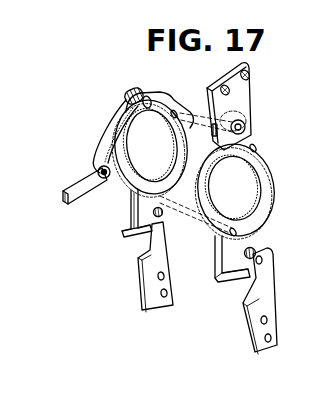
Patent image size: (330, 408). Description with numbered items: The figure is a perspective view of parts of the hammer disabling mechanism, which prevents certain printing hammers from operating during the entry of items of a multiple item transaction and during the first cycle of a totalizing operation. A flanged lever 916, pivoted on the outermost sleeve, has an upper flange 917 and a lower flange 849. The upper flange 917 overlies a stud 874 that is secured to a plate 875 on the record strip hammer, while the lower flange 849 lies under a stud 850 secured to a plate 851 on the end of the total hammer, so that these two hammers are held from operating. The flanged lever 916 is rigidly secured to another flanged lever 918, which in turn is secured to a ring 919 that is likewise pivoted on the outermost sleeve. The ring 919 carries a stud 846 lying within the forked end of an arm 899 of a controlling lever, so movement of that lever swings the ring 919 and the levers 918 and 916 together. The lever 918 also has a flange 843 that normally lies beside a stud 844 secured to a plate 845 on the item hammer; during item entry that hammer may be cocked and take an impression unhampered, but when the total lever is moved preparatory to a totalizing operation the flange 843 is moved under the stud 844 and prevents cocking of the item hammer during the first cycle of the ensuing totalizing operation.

The ring 919 is at (126, 96).
The flanged lever 918 is at (166, 108).
The plate 875 is at (247, 88).
The upper flange 917 is at (240, 110).
The stud 874 is at (245, 127).
The stud 846 is at (105, 180).
The arm 899 is at (80, 198).
The flange 843 is at (125, 230).
The stud 844 is at (163, 218).
The plate 845 is at (150, 274).
The flanged lever 916 is at (247, 231).
The stud 850 is at (256, 251).
The lower flange 849 is at (240, 280).
The plate 851 is at (256, 314).